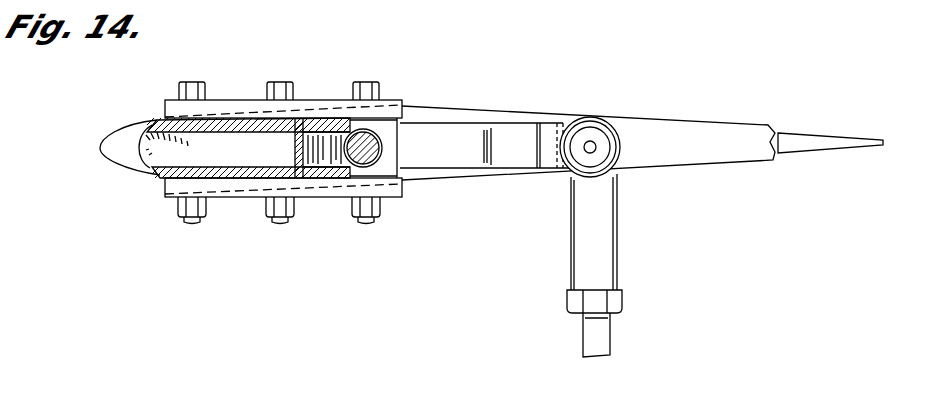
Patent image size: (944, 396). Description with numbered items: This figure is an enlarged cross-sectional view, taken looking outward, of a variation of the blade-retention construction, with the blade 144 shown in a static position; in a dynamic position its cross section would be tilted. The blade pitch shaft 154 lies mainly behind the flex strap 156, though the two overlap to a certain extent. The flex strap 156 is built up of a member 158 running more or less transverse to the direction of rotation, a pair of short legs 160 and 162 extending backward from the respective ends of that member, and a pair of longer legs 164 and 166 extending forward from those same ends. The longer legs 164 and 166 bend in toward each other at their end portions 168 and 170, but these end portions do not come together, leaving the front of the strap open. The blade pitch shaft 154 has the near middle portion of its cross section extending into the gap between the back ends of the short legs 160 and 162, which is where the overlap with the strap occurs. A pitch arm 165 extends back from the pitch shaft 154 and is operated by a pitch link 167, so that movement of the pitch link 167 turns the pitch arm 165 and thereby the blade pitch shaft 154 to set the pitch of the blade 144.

The blade 144 is at (472, 107).
The blade pitch shaft 154 is at (382, 153).
The flex strap 156 is at (236, 153).
The member 158 is at (292, 146).
The short leg 160 is at (335, 118).
The short leg 162 is at (328, 180).
The longer leg 164 is at (233, 120).
The pitch arm 165 is at (483, 165).
The longer leg 166 is at (237, 180).
The pitch link 167 is at (612, 247).
The end portion 168 is at (147, 130).
The end portion 170 is at (150, 170).